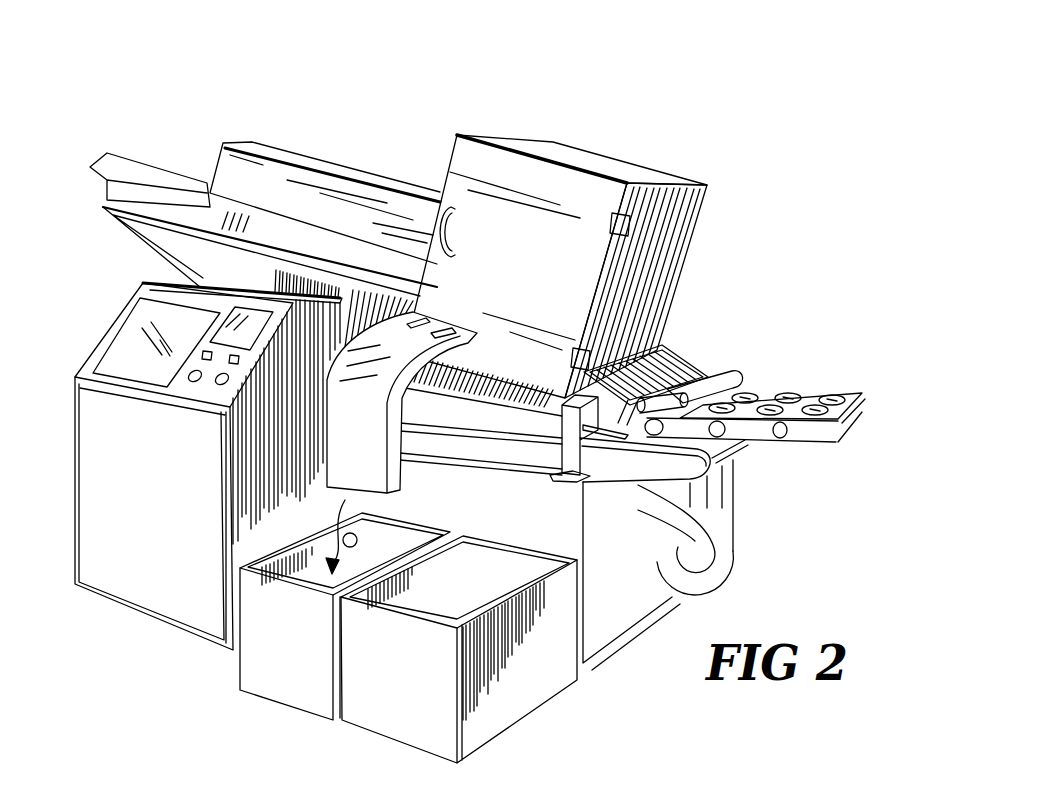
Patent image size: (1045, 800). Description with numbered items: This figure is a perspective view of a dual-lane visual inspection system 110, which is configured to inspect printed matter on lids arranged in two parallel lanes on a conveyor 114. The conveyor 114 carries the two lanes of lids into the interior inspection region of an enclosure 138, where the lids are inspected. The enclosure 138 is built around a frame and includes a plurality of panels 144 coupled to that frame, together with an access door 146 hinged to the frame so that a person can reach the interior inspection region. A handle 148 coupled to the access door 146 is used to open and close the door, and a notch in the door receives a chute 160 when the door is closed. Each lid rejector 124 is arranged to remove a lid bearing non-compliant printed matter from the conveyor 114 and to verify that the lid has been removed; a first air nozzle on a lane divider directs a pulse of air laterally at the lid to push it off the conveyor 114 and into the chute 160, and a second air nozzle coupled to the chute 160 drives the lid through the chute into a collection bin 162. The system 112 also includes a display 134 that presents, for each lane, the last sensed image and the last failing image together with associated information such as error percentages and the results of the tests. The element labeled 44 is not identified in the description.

The dual-lane visual inspection system 110 is at (368, 126).
The system 112 is at (812, 403).
The conveyor 114 is at (768, 395).
The lid rejector 124 is at (448, 371).
The display 134 is at (137, 352).
The enclosure 138 is at (585, 156).
The panels 144 is at (640, 172).
The side wall 44 is at (681, 232).
The access door 146 is at (479, 253).
The handle 148 is at (455, 230).
The chute 160 is at (390, 476).
The collection bin 162 is at (290, 653).